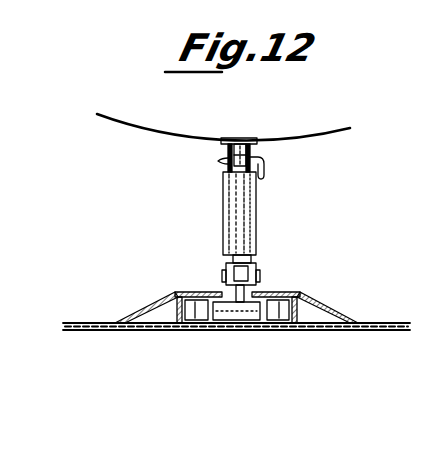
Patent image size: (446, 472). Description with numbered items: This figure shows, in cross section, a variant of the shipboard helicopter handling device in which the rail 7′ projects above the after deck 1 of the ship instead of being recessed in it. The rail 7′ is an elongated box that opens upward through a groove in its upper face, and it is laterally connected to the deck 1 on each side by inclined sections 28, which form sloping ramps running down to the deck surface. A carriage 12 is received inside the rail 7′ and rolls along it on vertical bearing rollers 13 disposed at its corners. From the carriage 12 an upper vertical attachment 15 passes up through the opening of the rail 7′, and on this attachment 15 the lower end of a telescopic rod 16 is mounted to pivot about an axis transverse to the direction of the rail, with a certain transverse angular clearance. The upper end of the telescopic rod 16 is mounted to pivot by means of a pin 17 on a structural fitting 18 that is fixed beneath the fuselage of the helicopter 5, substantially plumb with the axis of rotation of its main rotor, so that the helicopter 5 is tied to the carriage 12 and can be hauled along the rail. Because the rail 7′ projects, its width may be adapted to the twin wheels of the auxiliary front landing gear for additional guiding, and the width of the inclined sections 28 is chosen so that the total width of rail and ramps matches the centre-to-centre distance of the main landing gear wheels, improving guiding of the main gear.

The after deck 1 is at (393, 318).
The helicopter 5 is at (131, 133).
The rail 7′ is at (200, 292).
The carriage 12 is at (238, 321).
The vertical bearing rollers 13 is at (190, 321).
The upper vertical attachment 15 is at (264, 281).
The telescopic rod 16 is at (240, 210).
The pin 17 is at (266, 166).
The structural fitting 18 is at (236, 138).
The inclined sections 28 is at (145, 305).